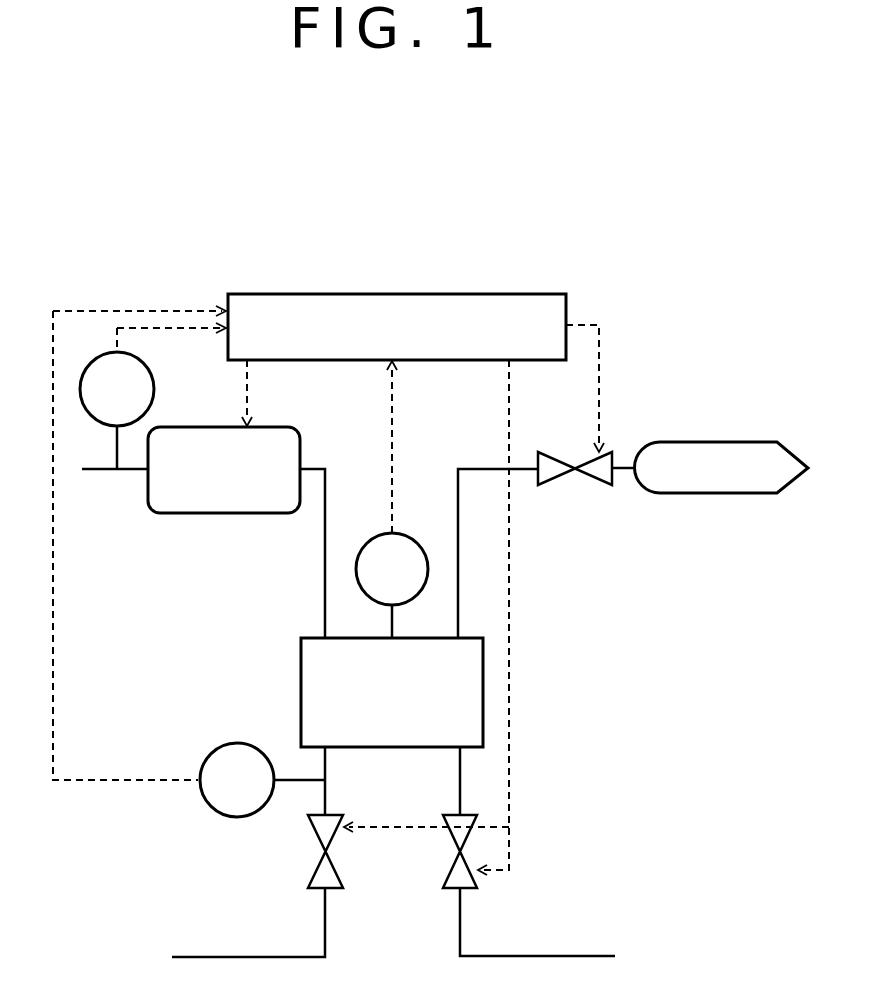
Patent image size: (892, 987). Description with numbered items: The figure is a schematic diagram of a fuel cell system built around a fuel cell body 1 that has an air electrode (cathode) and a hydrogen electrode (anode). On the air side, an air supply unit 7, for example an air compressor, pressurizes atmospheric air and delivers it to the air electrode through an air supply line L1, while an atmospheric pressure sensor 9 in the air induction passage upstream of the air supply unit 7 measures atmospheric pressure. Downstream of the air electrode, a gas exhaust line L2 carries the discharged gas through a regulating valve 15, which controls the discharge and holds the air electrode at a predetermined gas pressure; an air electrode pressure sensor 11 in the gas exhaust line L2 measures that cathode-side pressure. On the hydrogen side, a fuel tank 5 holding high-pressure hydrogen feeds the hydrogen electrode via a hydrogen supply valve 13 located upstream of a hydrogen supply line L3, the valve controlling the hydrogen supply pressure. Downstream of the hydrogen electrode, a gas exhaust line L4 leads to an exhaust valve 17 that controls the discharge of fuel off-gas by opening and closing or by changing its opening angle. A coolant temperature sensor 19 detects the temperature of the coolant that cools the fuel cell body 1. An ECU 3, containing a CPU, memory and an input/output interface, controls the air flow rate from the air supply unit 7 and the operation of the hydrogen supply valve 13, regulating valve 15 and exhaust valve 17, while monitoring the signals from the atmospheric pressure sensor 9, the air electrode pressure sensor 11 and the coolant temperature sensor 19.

The fuel cell body 1 is at (301, 665).
The ECU 3 is at (290, 294).
The fuel tank 5 is at (690, 442).
The air supply unit 7 is at (270, 427).
The atmospheric pressure sensor 9 is at (155, 384).
The air electrode pressure sensor 11 is at (210, 757).
The hydrogen supply valve 13 is at (553, 480).
The regulating valve 15 is at (313, 872).
The exhaust valve 17 is at (477, 880).
The coolant temperature sensor 19 is at (368, 543).
The air supply line L1 is at (325, 575).
The gas exhaust line L2 is at (325, 793).
The hydrogen supply line L3 is at (458, 580).
The gas exhaust line L4 is at (460, 770).